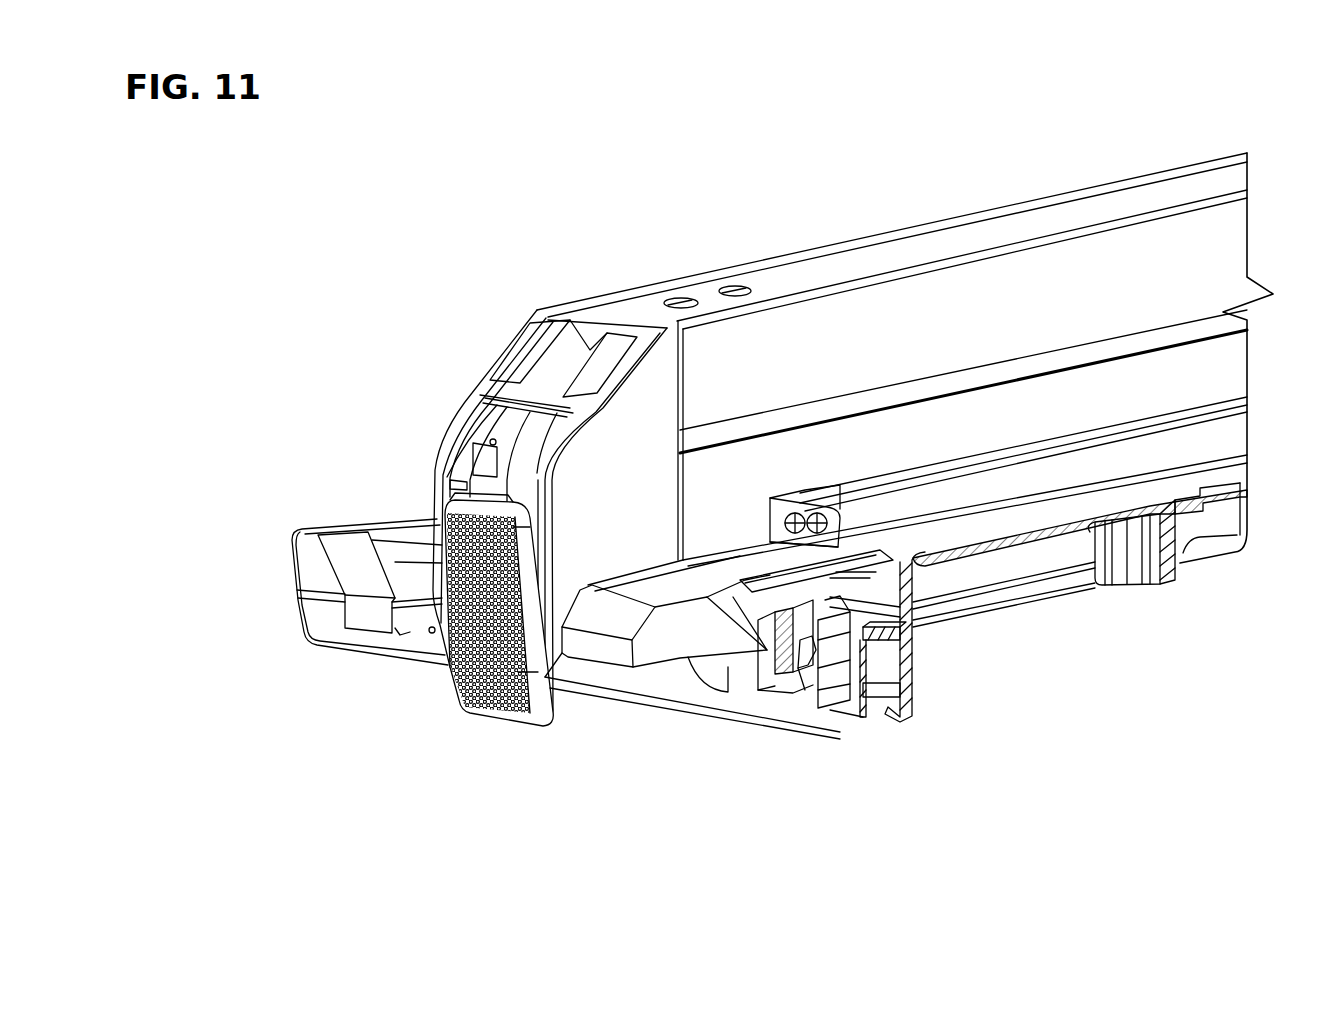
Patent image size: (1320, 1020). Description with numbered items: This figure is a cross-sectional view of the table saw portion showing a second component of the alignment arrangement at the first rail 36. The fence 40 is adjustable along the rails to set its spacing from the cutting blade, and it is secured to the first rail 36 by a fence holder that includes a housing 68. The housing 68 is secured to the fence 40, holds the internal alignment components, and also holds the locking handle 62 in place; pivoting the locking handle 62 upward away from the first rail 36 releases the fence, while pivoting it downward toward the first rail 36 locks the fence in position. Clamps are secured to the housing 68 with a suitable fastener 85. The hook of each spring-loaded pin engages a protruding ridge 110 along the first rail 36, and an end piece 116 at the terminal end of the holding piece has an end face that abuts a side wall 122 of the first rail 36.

The first rail 36 is at (353, 528).
The fence 40 is at (866, 252).
The locking handle 62 is at (485, 710).
The housing 68 is at (612, 630).
The fastener 85 is at (780, 670).
The protruding ridge 110 is at (863, 632).
The end piece 116 is at (805, 678).
The side wall 122 is at (823, 673).